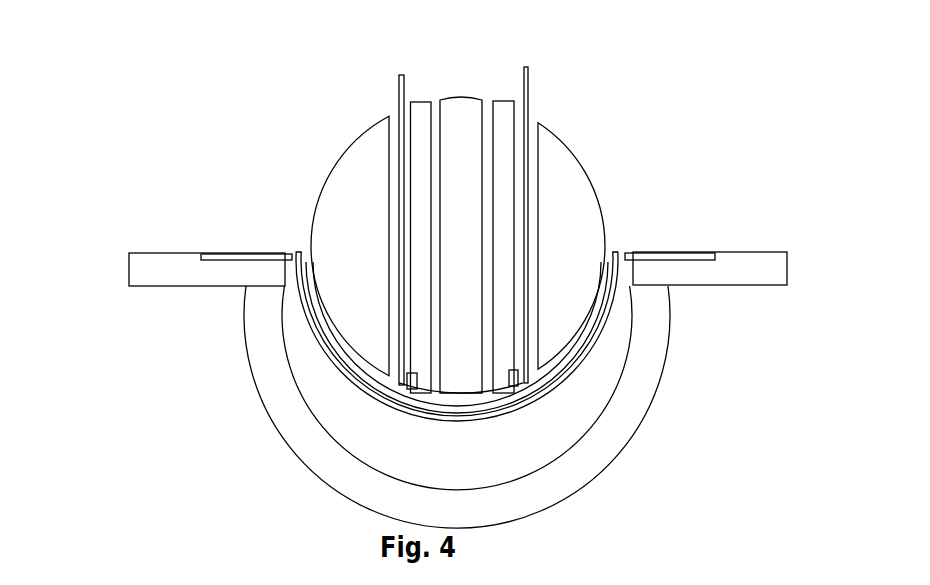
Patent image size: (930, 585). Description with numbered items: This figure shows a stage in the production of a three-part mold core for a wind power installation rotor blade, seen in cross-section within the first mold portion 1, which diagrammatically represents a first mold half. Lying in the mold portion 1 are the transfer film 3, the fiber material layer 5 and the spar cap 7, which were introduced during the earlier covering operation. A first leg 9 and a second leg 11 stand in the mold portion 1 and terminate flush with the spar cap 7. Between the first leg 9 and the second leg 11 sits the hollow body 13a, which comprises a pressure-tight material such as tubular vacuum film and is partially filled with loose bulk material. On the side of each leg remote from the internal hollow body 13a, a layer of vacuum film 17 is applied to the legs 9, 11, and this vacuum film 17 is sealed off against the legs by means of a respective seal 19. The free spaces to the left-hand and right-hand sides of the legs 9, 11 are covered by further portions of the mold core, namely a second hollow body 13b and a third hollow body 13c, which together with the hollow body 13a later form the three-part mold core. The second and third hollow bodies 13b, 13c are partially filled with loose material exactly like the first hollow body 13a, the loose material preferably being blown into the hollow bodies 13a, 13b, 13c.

The first mold portion 1 is at (128, 268).
The transfer film 3 is at (227, 255).
The fiber material layer 5 is at (299, 252).
The spar cap 7 is at (462, 405).
The first leg 9 is at (417, 110).
The second leg 11 is at (505, 200).
The hollow body 13a is at (462, 97).
The second hollow body 13b is at (343, 146).
The third hollow body 13c is at (576, 142).
The vacuum film 17 is at (527, 87).
The seal 19 is at (527, 382).